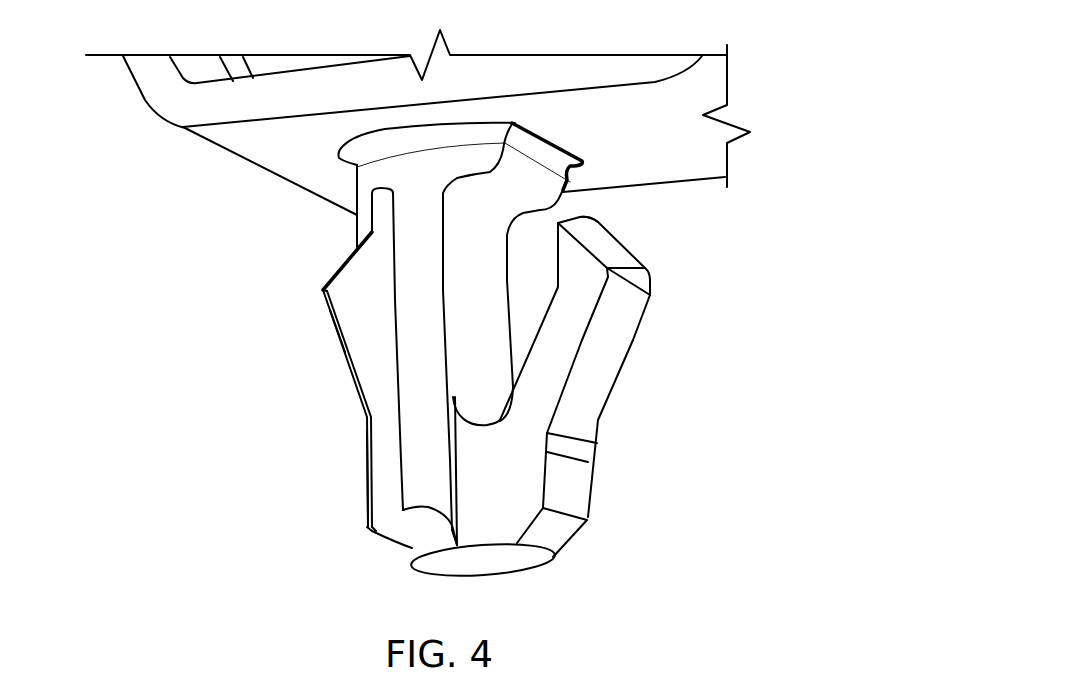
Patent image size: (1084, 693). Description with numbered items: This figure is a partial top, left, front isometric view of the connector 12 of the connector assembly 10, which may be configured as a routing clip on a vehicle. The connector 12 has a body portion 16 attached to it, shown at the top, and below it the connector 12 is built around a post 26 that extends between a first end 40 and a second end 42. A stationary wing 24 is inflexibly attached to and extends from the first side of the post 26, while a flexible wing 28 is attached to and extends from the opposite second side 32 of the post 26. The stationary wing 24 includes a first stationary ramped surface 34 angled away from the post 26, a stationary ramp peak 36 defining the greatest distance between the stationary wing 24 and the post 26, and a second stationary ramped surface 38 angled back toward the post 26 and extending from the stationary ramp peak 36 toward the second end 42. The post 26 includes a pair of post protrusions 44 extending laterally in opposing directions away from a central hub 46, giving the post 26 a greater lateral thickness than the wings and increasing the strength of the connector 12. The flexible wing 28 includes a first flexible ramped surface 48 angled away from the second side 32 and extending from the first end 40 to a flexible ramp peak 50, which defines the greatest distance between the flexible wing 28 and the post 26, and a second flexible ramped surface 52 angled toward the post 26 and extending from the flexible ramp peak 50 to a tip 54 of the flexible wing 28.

The connector assembly 10 is at (779, 46).
The body portion 16 is at (139, 97).
The second end 42 is at (275, 197).
The connector 12 is at (187, 400).
The second side 32 is at (479, 307).
The post protrusions 44 is at (423, 457).
The second stationary ramped surface 38 is at (352, 272).
The stationary wing 24 is at (284, 394).
The stationary ramp peak 36 is at (326, 292).
The first stationary ramped surface 34 is at (334, 327).
The first end 40 is at (354, 452).
The post 26 is at (429, 535).
The central hub 46 is at (484, 563).
The flexible wing 28 is at (646, 377).
The second flexible ramped surface 52 is at (613, 238).
The tip 54 is at (598, 213).
The flexible ramp peak 50 is at (637, 278).
The first flexible ramped surface 48 is at (600, 358).